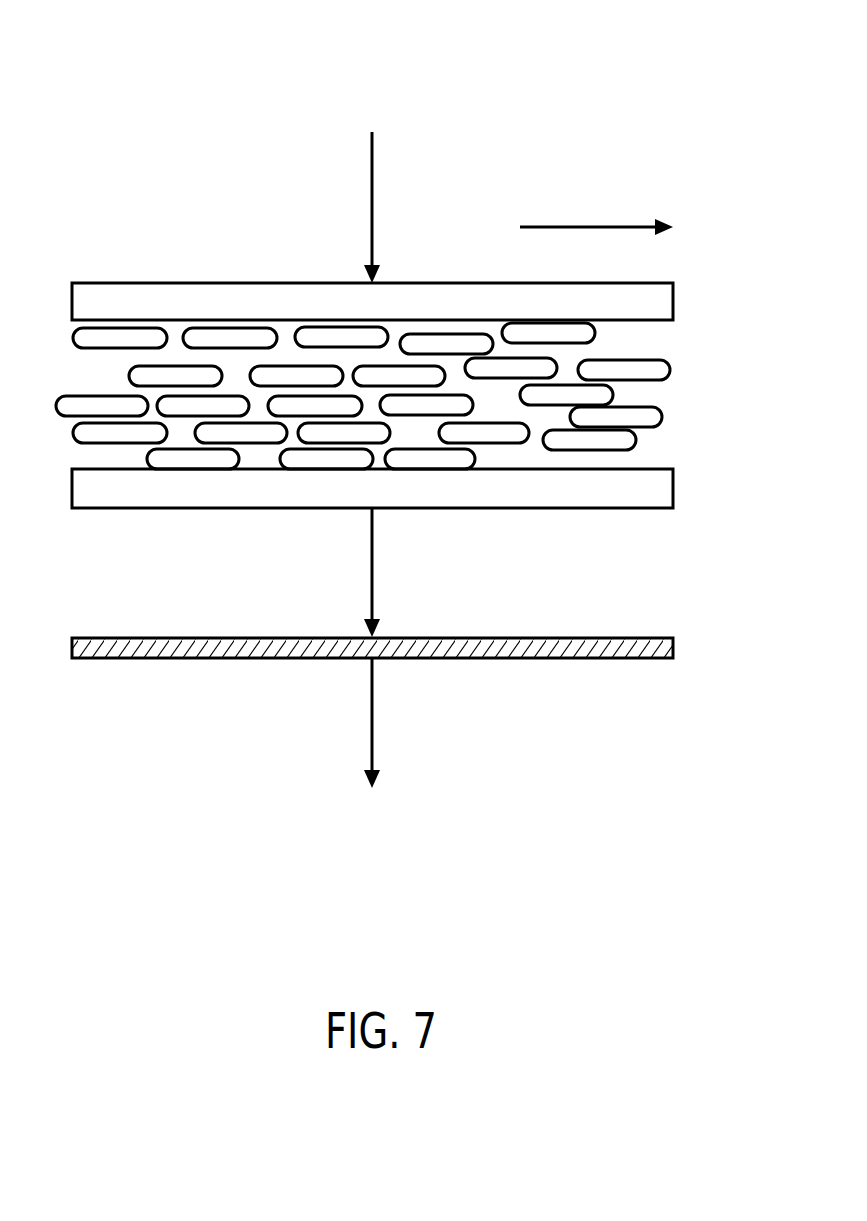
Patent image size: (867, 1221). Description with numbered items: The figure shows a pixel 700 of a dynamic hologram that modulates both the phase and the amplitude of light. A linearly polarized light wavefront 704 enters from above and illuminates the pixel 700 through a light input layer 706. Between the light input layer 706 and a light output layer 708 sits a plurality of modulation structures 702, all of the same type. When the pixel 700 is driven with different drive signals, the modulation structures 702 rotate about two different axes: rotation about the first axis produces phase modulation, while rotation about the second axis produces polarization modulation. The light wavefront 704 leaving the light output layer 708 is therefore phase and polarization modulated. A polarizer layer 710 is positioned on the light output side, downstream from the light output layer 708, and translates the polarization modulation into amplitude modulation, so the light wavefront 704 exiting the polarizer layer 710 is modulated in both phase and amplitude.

The pixel 700 is at (672, 50).
The modulation structures 702 is at (661, 413).
The light wavefront 704 is at (371, 162).
The light input layer 706 is at (673, 298).
The light output layer 708 is at (673, 485).
The polarizer layer 710 is at (673, 648).